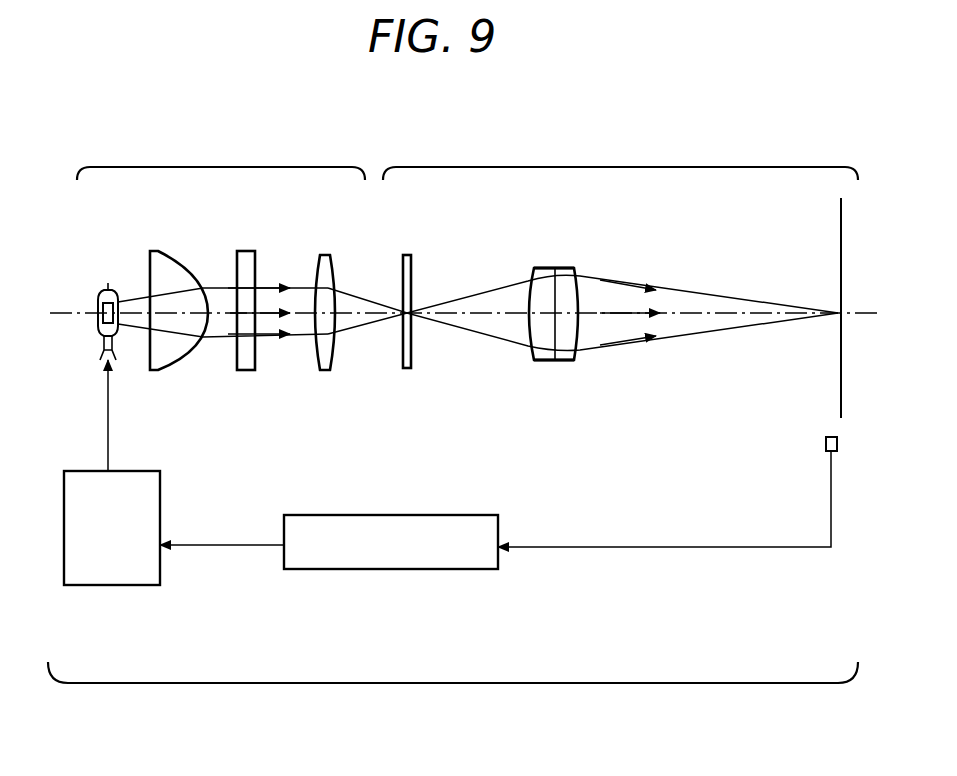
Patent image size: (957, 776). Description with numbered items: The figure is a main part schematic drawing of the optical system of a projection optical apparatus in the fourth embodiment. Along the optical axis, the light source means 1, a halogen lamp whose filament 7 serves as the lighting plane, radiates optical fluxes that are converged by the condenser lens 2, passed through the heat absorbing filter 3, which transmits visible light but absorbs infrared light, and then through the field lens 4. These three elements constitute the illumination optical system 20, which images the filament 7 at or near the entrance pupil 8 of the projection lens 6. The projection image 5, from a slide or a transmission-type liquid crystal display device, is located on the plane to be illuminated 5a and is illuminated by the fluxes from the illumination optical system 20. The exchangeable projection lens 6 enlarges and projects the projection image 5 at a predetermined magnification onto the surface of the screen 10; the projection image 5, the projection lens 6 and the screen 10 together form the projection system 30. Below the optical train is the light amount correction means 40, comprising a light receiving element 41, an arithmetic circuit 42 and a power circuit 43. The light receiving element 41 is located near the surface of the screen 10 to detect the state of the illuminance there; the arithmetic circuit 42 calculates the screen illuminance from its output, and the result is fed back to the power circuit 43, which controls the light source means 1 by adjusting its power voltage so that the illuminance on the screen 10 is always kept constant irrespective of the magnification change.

The light source means 1 is at (108, 283).
The condenser lens 2 is at (162, 251).
The heat absorbing filter 3 is at (245, 251).
The field lens 4 is at (325, 255).
The projection image 5 is at (409, 255).
The plane to be illuminated 5a is at (413, 354).
The projection lens 6 is at (545, 268).
The filament 7 is at (100, 325).
The entrance pupil 8 is at (566, 292).
The screen 10 is at (838, 223).
The illumination optical system 20 is at (221, 158).
The projection system 30 is at (620, 158).
The light amount correction means 40 is at (453, 693).
The light receiving element 41 is at (826, 440).
The arithmetic circuit 42 is at (400, 572).
The power circuit 43 is at (140, 590).